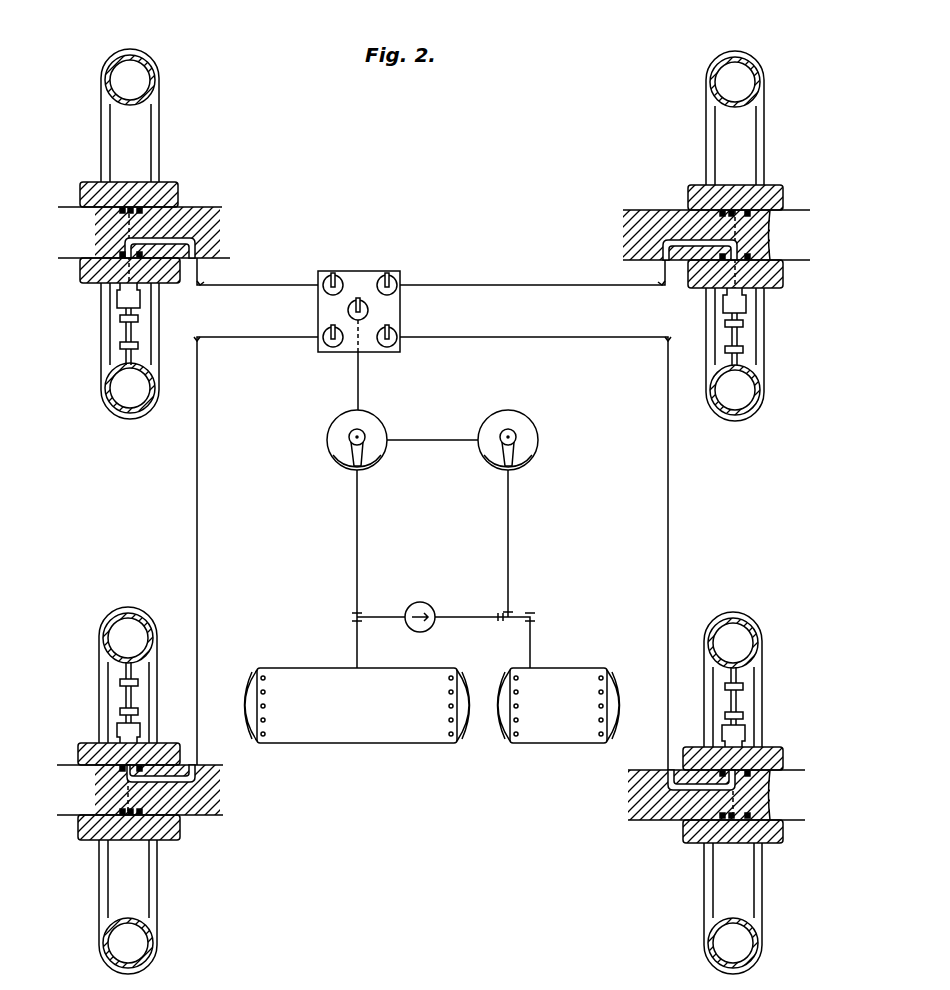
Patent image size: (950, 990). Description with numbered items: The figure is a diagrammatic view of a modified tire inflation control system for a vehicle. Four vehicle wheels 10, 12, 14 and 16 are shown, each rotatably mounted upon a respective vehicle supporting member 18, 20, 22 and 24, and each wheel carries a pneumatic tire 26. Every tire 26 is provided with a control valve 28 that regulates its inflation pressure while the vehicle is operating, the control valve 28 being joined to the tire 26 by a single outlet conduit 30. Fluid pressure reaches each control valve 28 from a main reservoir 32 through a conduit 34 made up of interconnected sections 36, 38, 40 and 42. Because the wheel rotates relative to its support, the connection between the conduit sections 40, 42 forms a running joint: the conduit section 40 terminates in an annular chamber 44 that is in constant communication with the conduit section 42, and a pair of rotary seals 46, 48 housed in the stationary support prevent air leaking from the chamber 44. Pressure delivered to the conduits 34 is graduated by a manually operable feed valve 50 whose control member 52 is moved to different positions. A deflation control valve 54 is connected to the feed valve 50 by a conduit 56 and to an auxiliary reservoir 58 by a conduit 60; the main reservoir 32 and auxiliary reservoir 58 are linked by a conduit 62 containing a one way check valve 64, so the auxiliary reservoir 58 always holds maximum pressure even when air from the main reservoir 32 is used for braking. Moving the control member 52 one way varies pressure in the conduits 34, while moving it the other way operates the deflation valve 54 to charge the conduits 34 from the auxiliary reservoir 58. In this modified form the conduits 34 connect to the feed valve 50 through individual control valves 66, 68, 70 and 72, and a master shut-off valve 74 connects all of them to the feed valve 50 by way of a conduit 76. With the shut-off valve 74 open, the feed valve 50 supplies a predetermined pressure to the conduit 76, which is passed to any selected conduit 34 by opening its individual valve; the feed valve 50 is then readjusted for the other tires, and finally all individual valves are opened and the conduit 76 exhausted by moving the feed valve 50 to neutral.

The vehicle wheel 10 is at (178, 190).
The vehicle wheel 12 is at (688, 187).
The vehicle wheel 14 is at (180, 838).
The vehicle wheel 16 is at (683, 838).
The vehicle supporting member 18 is at (216, 222).
The vehicle supporting member 20 is at (625, 236).
The vehicle supporting member 22 is at (212, 792).
The vehicle supporting member 24 is at (628, 795).
The pneumatic tire 26 is at (732, 616).
The control valve 28 is at (740, 730).
The outlet conduit 30 is at (738, 697).
The main reservoir 32 is at (357, 705).
The conduit 34 is at (657, 422).
The conduit section 36 is at (360, 562).
The conduit section 38 is at (666, 494).
The conduit section 40 is at (670, 778).
The conduit section 42 is at (783, 752).
The annular chamber 44 is at (732, 822).
The rotary seal 46 is at (712, 845).
The rotary seal 48 is at (150, 748).
The feed valve 50 is at (328, 441).
The control member 52 is at (354, 468).
The deflation control valve 54 is at (537, 440).
The conduit 56 is at (428, 440).
The auxiliary reservoir 58 is at (559, 705).
The conduit 60 is at (510, 566).
The conduit 62 is at (490, 618).
The one way check valve 64 is at (432, 606).
The individual control valve 66 is at (338, 277).
The individual control valve 68 is at (398, 277).
The individual control valve 70 is at (328, 343).
The individual control valve 72 is at (396, 344).
The master shut-off valve 74 is at (368, 310).
The conduit 76 is at (359, 405).